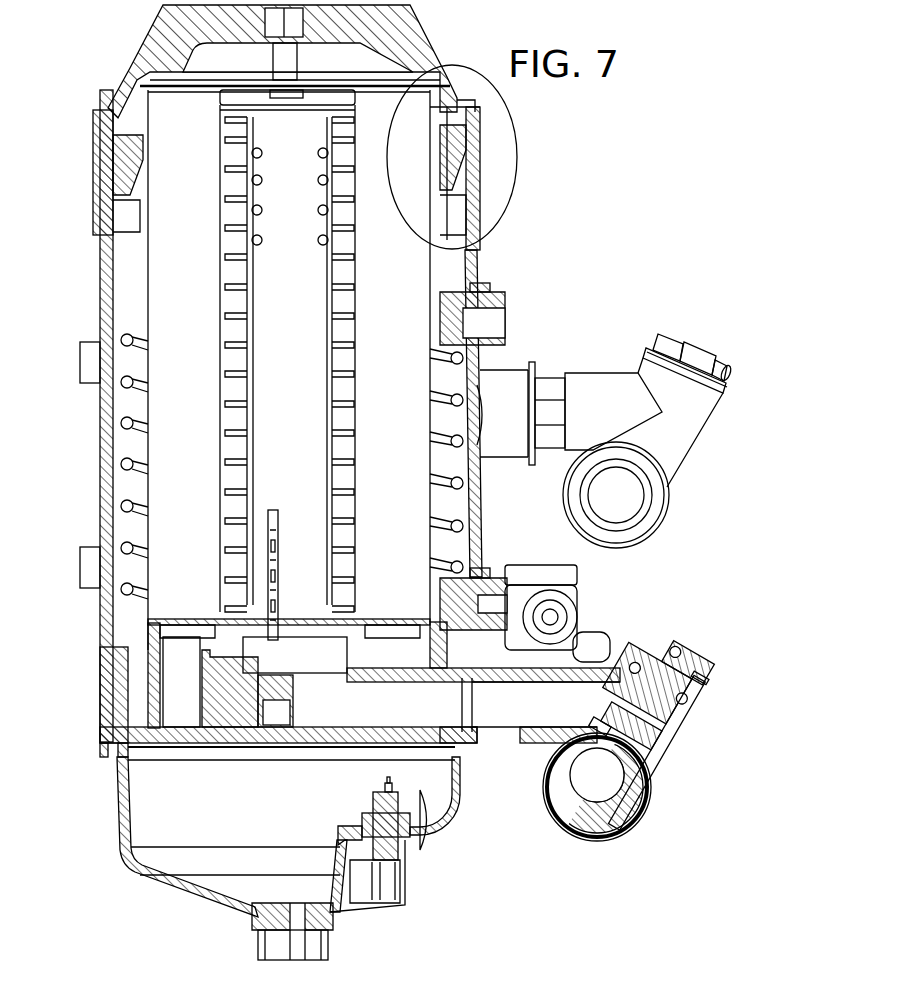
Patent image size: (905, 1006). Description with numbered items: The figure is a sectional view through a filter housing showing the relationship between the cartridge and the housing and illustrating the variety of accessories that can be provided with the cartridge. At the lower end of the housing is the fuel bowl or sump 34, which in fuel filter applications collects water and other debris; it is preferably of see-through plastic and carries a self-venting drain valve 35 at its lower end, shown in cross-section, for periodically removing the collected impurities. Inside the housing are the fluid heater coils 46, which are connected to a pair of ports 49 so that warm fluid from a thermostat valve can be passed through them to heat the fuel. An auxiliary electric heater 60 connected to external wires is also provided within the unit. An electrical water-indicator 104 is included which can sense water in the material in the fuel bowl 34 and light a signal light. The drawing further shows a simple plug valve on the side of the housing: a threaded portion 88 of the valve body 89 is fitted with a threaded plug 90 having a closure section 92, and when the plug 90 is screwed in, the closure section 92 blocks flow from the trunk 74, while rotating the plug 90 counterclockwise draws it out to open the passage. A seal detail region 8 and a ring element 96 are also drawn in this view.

The cap/housing seal detail 8 is at (517, 156).
The ports 49 is at (505, 292).
The coils 46 is at (121, 422).
The electric heater 60 is at (266, 532).
The threaded plug 90 is at (688, 655).
The trunk 74 is at (559, 717).
The threaded portion 88 is at (680, 718).
The valve body 89 is at (677, 740).
The closure section 92 is at (660, 762).
The ring 96 is at (597, 790).
The electrical water-indicator 104 is at (413, 853).
The sump 34 is at (135, 873).
The self-venting drain valve 35 is at (330, 945).